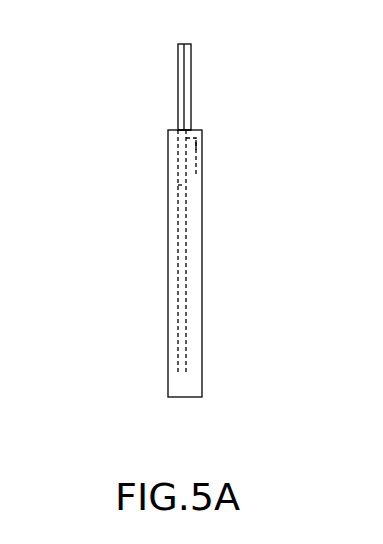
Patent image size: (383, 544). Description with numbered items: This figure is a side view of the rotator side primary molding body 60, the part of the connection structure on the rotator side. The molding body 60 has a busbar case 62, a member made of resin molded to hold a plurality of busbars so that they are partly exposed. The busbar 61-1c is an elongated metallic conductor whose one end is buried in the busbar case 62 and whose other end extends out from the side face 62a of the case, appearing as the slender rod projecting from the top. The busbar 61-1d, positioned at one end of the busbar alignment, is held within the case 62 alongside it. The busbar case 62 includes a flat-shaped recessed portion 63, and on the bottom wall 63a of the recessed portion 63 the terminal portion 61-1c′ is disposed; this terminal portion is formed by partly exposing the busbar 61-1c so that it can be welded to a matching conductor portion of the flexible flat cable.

The rotator side primary molding body 60 is at (216, 127).
The busbar 61-1c is at (177, 58).
The side face 62a is at (195, 128).
The busbar case 62 is at (202, 323).
The busbar 61-1d is at (178, 293).
The terminal portion 61-1c′ is at (197, 237).
The recessed portion 63 is at (196, 208).
The bottom wall 63a is at (196, 168).